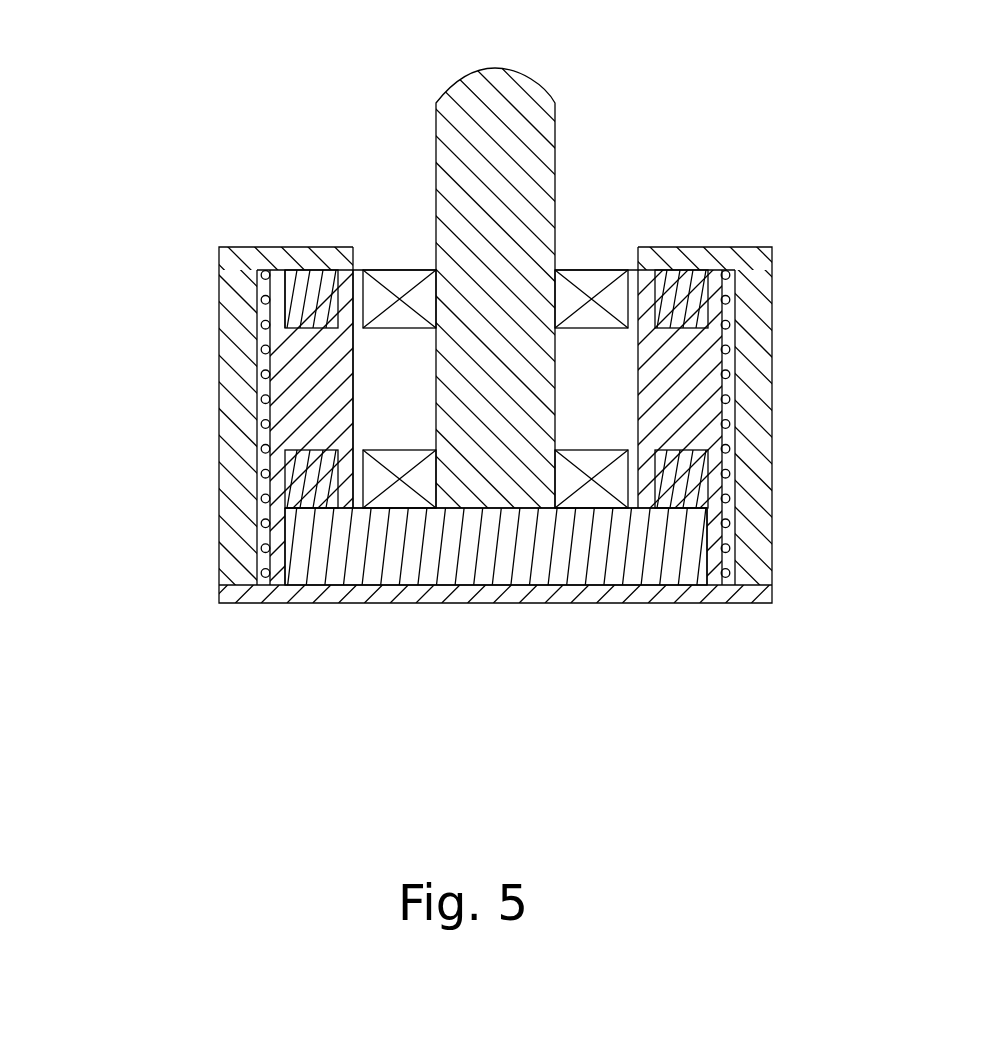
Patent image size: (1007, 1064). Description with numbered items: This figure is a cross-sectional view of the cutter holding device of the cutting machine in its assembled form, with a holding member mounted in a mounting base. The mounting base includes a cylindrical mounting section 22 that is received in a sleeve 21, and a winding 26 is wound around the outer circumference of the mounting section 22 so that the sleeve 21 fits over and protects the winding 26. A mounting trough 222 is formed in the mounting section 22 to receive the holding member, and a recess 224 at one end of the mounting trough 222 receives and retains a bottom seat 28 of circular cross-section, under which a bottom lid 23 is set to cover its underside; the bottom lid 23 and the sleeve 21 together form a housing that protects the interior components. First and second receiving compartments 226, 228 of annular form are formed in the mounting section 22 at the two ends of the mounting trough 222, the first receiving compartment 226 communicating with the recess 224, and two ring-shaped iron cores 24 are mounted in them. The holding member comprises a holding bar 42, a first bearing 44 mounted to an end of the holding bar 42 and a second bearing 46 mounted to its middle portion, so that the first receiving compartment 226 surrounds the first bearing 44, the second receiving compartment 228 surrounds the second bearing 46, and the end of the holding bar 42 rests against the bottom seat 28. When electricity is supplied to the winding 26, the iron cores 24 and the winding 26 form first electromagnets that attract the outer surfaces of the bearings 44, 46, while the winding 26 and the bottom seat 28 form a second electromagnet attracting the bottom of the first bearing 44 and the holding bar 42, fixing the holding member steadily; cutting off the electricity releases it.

The sleeve 21 is at (758, 427).
The mounting section 22 is at (293, 410).
The mounting trough 222 is at (353, 300).
The recess 224 is at (285, 548).
The first receiving compartment 226 is at (285, 490).
The second receiving compartment 228 is at (290, 283).
The bottom lid 23 is at (475, 598).
The iron cores 24 is at (310, 292).
The winding 26 is at (265, 350).
The bottom seat 28 is at (615, 570).
The holding bar 42 is at (490, 152).
The first bearing 44 is at (400, 492).
The second bearing 46 is at (593, 278).